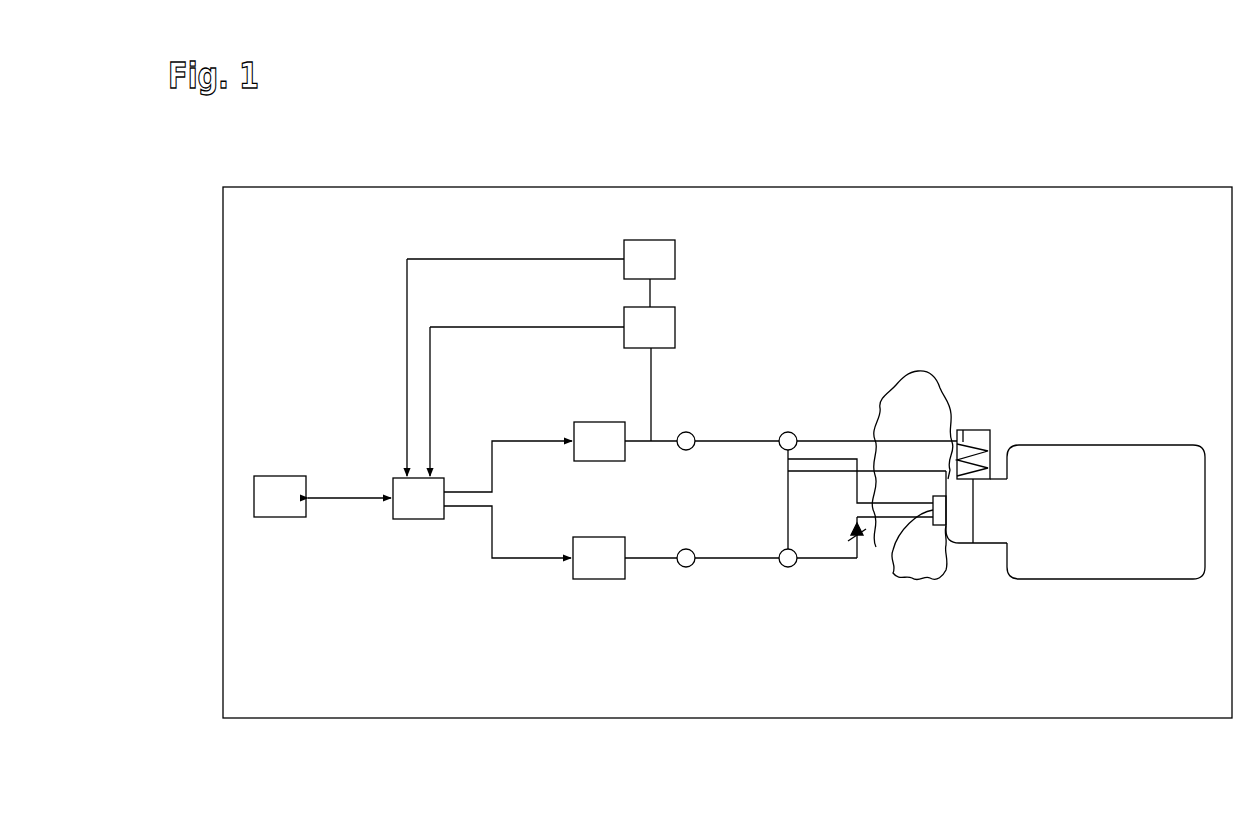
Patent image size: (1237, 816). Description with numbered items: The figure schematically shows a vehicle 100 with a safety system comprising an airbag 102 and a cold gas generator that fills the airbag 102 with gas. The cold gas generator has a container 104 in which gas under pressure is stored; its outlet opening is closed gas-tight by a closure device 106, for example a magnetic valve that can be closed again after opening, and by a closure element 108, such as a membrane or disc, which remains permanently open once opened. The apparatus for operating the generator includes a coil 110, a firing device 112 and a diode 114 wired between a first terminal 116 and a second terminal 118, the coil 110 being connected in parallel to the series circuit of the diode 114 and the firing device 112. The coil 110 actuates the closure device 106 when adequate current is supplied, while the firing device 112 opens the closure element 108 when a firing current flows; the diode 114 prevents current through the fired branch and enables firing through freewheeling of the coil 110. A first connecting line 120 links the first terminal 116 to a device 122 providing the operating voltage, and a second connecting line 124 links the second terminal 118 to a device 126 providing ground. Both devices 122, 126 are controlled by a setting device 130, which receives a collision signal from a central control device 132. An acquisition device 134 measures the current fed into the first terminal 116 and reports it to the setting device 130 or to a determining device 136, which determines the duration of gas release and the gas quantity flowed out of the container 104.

The vehicle 100 is at (1033, 187).
The airbag 102 is at (923, 580).
The container 104 is at (1142, 447).
The closure device 106 is at (990, 442).
The closure element 108 is at (960, 545).
The coil 110 is at (960, 430).
The firing device 112 is at (895, 553).
The diode 114 is at (852, 545).
The first terminal 116 is at (788, 432).
The second terminal 118 is at (788, 567).
The first connecting line 120 is at (727, 440).
The device for providing a first operating voltage potential 122 is at (588, 422).
The second connecting line 124 is at (729, 561).
The device for providing a second operating voltage potential 126 is at (588, 579).
The setting device 130 is at (424, 519).
The central control device 132 is at (282, 517).
The acquisition device 134 is at (675, 311).
The determining device 136 is at (675, 259).